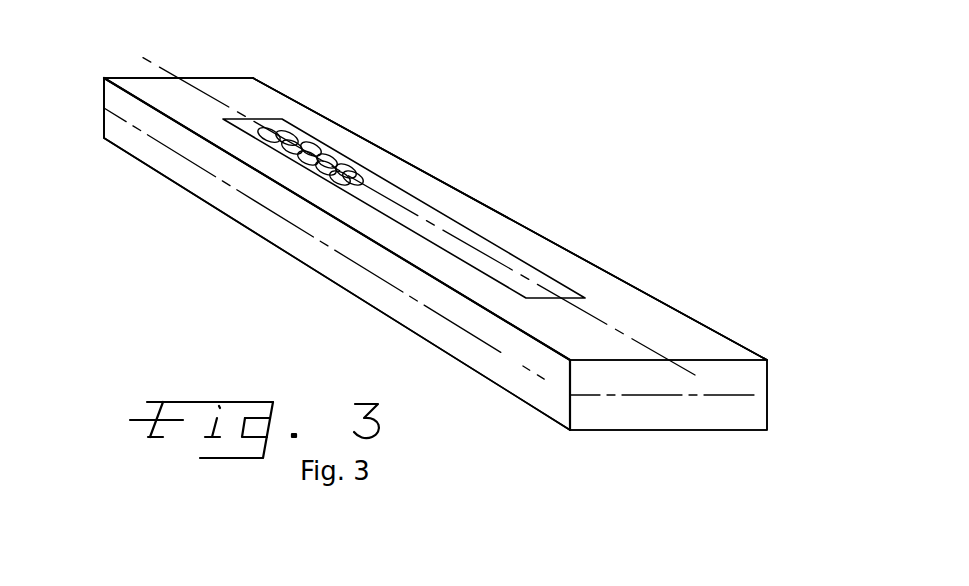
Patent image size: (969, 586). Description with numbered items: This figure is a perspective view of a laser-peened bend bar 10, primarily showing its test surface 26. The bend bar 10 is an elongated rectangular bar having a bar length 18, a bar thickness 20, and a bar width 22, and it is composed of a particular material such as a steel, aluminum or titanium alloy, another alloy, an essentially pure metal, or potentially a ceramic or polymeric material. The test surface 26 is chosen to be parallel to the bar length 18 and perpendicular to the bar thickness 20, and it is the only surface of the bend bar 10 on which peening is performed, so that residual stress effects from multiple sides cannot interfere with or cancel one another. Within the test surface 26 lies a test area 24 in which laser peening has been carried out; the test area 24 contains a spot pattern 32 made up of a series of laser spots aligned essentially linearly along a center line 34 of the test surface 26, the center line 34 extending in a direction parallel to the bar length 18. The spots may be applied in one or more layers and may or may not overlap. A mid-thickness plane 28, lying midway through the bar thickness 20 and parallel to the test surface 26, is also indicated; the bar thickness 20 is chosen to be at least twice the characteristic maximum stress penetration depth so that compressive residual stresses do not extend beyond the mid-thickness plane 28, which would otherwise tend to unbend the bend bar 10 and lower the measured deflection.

The bend bar 10 is at (283, 238).
The bar length 18 is at (563, 245).
The bar thickness 20 is at (768, 378).
The bar width 22 is at (130, 78).
The test area 24 is at (375, 173).
The test surface 26 is at (262, 102).
The mid-thickness plane 28 is at (418, 304).
The spot pattern 32 is at (287, 128).
The center line 34 is at (615, 327).